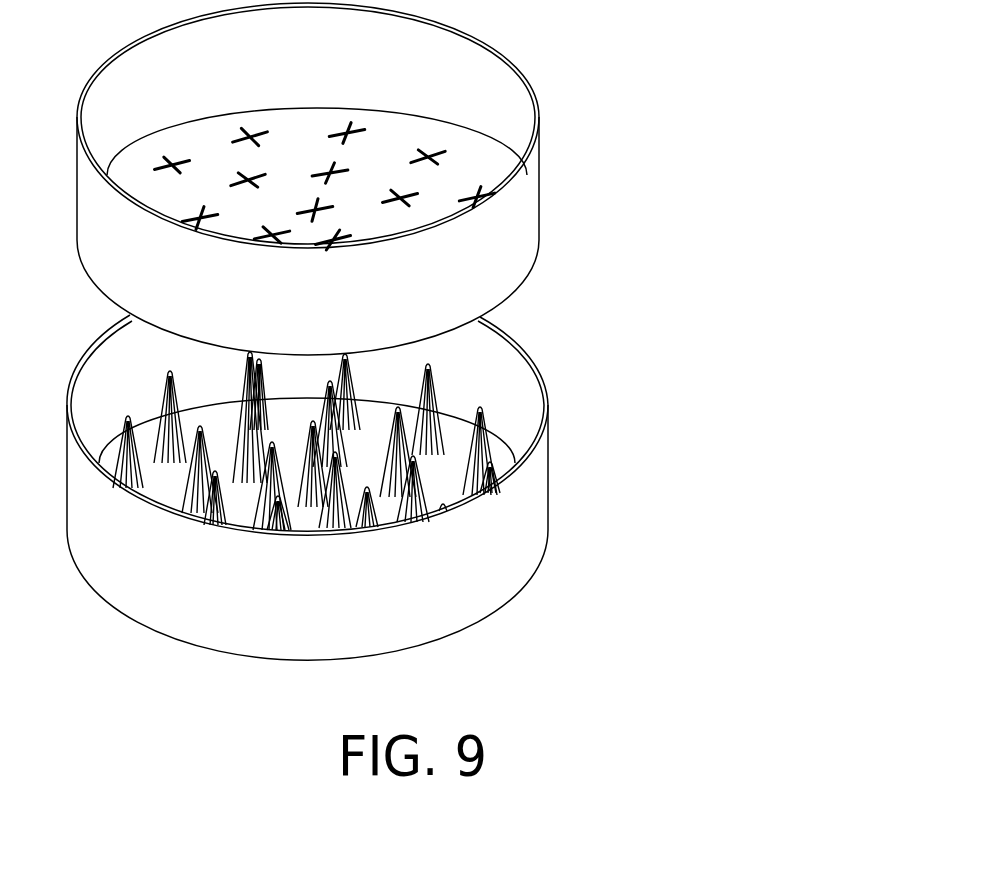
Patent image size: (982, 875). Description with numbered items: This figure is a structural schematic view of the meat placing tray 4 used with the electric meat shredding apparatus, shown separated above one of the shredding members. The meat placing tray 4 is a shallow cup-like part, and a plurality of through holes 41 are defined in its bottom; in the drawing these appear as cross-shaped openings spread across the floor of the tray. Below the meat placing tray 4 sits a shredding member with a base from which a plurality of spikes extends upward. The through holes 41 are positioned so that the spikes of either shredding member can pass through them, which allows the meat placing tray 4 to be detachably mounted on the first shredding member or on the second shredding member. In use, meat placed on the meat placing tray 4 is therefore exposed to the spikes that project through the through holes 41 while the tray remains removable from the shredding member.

The meat placing tray 4 is at (518, 230).
The through holes 41 is at (437, 150).